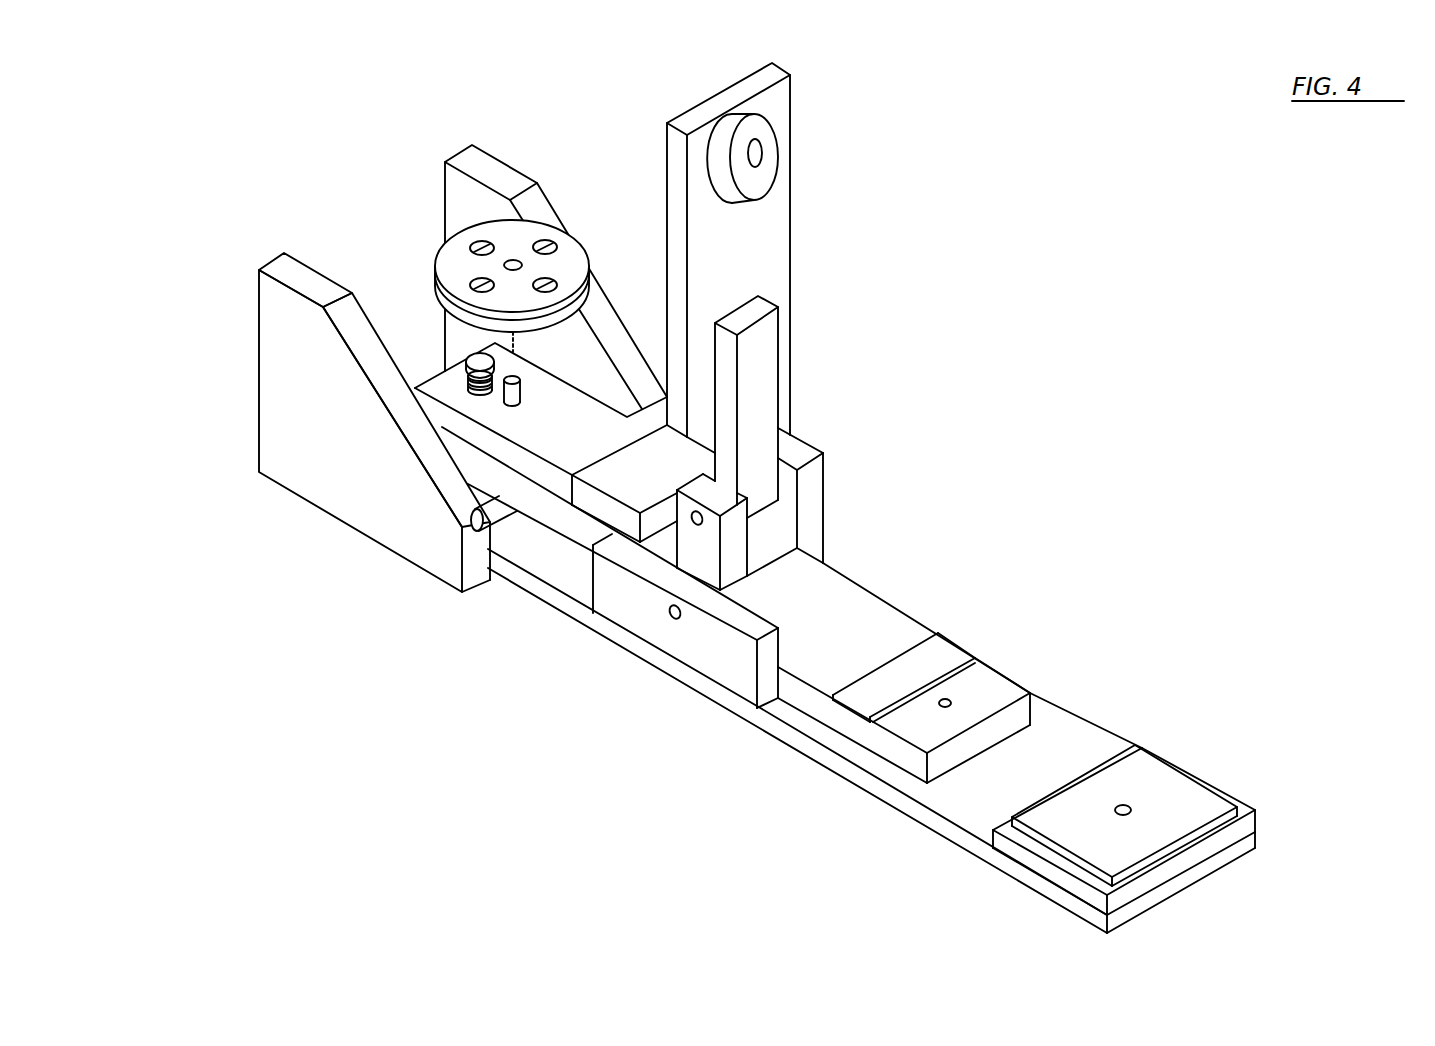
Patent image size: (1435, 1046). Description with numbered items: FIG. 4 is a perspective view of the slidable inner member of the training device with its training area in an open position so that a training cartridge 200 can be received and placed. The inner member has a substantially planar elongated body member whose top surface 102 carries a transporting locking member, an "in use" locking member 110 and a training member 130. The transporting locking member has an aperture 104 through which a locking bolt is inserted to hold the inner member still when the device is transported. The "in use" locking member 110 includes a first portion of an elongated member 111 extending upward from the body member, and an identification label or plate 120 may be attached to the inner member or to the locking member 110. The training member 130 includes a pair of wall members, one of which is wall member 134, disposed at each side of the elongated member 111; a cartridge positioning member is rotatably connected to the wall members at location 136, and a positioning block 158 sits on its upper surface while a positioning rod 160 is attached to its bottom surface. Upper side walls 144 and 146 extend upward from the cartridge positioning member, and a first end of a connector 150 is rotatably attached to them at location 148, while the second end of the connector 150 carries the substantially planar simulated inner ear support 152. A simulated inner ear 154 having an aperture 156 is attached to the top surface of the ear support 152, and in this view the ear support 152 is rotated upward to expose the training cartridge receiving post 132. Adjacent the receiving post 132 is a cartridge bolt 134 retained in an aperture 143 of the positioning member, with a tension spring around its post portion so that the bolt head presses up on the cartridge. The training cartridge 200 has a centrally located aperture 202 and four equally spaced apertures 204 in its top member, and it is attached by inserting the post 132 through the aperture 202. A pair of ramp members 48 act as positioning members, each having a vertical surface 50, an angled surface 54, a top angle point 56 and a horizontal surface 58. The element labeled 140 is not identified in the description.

The ramp member 48 is at (314, 398).
The vertical surface 50 is at (337, 434).
The angled surface 54 is at (425, 442).
The top angle point 56 is at (538, 184).
The horizontal surface 58 is at (280, 268).
The top surface 102 is at (958, 805).
The aperture 104 is at (1123, 802).
The "in use" locking member 110 is at (1040, 688).
The elongated member 111 is at (827, 717).
The identification label 120 is at (957, 648).
The training member 130 is at (834, 290).
The training cartridge receiving post 132 is at (521, 394).
The cartridge bolt 134 is at (687, 435).
The connection location 136 is at (673, 618).
The slide plate 140 is at (610, 567).
The aperture 143 is at (480, 393).
The upper side wall 144 is at (722, 604).
The side wall 146 is at (773, 581).
The attachment location 148 is at (697, 526).
The connector 150 is at (765, 417).
The simulated inner ear support 152 is at (785, 263).
The simulated inner ear 154 is at (798, 166).
The aperture 156 is at (758, 150).
The positioning block 158 is at (660, 487).
The positioning rod 160 is at (510, 519).
The training cartridge 200 is at (504, 275).
The aperture 202 is at (525, 268).
The apertures 204 is at (470, 245).